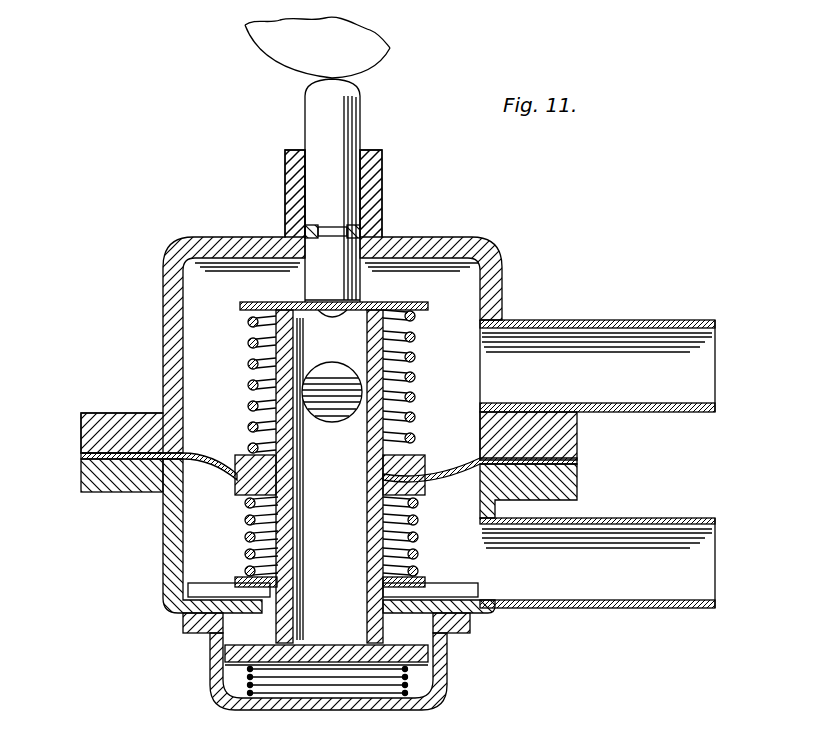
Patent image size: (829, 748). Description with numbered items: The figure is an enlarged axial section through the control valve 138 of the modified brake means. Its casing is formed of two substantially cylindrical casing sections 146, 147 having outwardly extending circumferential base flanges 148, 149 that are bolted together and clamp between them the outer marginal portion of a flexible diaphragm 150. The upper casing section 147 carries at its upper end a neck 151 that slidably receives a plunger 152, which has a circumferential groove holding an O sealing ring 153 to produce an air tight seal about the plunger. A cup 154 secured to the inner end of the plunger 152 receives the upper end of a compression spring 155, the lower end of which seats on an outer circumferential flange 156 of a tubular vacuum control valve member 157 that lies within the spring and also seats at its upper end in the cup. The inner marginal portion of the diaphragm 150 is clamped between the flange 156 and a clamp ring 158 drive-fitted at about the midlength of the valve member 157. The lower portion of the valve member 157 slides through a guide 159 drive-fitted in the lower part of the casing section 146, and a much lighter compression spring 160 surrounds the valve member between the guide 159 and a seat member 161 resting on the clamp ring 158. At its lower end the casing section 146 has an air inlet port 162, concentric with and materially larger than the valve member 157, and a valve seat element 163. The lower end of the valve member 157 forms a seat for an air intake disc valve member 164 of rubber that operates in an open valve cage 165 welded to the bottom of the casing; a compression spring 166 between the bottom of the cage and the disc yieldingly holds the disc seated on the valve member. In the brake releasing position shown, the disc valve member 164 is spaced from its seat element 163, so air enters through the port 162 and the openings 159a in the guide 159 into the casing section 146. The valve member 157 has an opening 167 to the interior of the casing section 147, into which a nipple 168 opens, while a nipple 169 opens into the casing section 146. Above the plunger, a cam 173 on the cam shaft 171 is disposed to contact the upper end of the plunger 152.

The control valve 138 is at (490, 244).
The casing section 146 is at (165, 552).
The casing section 147 is at (163, 307).
The base flange 148 is at (81, 478).
The base flange 149 is at (81, 422).
The flexible diaphragm 150 is at (210, 460).
The neck 151 is at (285, 172).
The plunger 152 is at (322, 107).
The O sealing ring 153 is at (382, 222).
The cup 154 is at (255, 290).
The compression spring 155 is at (252, 346).
The outer circumferential flange 156 is at (422, 456).
The tubular vacuum control valve member 157 is at (417, 362).
The clamp ring 158 is at (228, 493).
The guide 159 is at (240, 572).
The openings 159a is at (441, 580).
The compression spring 160 is at (418, 528).
The seat member 161 is at (420, 496).
The air inlet port 162 is at (385, 613).
The valve seat element 163 is at (440, 630).
The air intake disc valve member 164 is at (223, 643).
The open valve cage 165 is at (225, 678).
The compression spring 166 is at (232, 712).
The opening 167 is at (340, 424).
The nipple 168 is at (617, 318).
The nipple 169 is at (652, 518).
The cam shaft 171 is at (378, 712).
The cam 173 is at (385, 58).